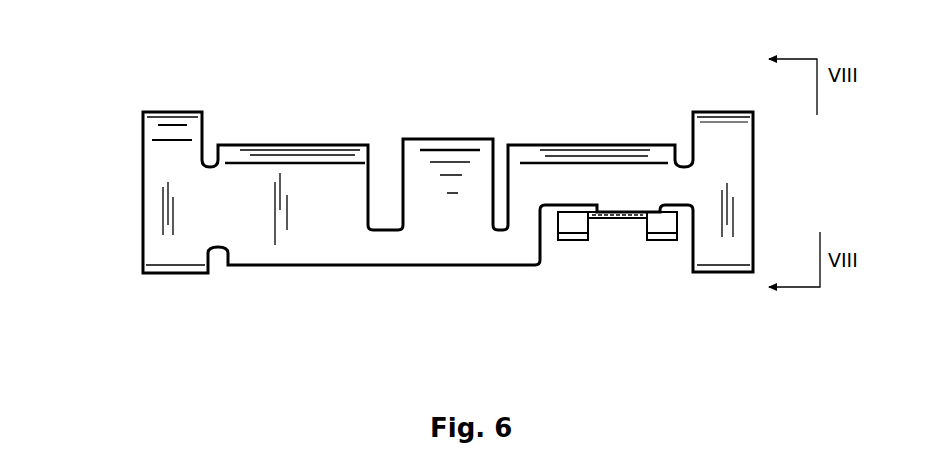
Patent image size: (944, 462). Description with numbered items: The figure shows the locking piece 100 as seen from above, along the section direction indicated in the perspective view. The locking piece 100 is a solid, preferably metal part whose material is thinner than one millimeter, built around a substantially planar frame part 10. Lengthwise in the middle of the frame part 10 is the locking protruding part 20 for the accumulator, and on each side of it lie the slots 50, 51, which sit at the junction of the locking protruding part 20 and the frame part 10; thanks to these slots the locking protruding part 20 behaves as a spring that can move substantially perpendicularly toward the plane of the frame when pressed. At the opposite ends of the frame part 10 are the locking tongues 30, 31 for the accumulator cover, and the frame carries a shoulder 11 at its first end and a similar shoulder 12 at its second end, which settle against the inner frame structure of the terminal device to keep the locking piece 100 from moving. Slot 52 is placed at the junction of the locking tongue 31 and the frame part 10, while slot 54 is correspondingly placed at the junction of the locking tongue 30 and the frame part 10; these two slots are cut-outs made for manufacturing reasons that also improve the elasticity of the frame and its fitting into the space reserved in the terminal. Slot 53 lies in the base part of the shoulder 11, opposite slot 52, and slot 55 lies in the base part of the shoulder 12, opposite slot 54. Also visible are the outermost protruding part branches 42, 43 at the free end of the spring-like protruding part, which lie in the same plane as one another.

The locking piece 100 is at (93, 141).
The frame part 10 is at (317, 178).
The shoulder 11 is at (175, 272).
The shoulder 12 is at (732, 274).
The locking protruding part 20 is at (443, 153).
The locking tongue 30 is at (713, 110).
The locking tongue 31 is at (163, 115).
The protruding part branch 42 is at (577, 241).
The protruding part branch 43 is at (652, 241).
The slot 50 is at (387, 138).
The slot 51 is at (501, 130).
The slot 52 is at (216, 121).
The slot 53 is at (222, 277).
The slot 54 is at (683, 128).
The slot 55 is at (681, 249).